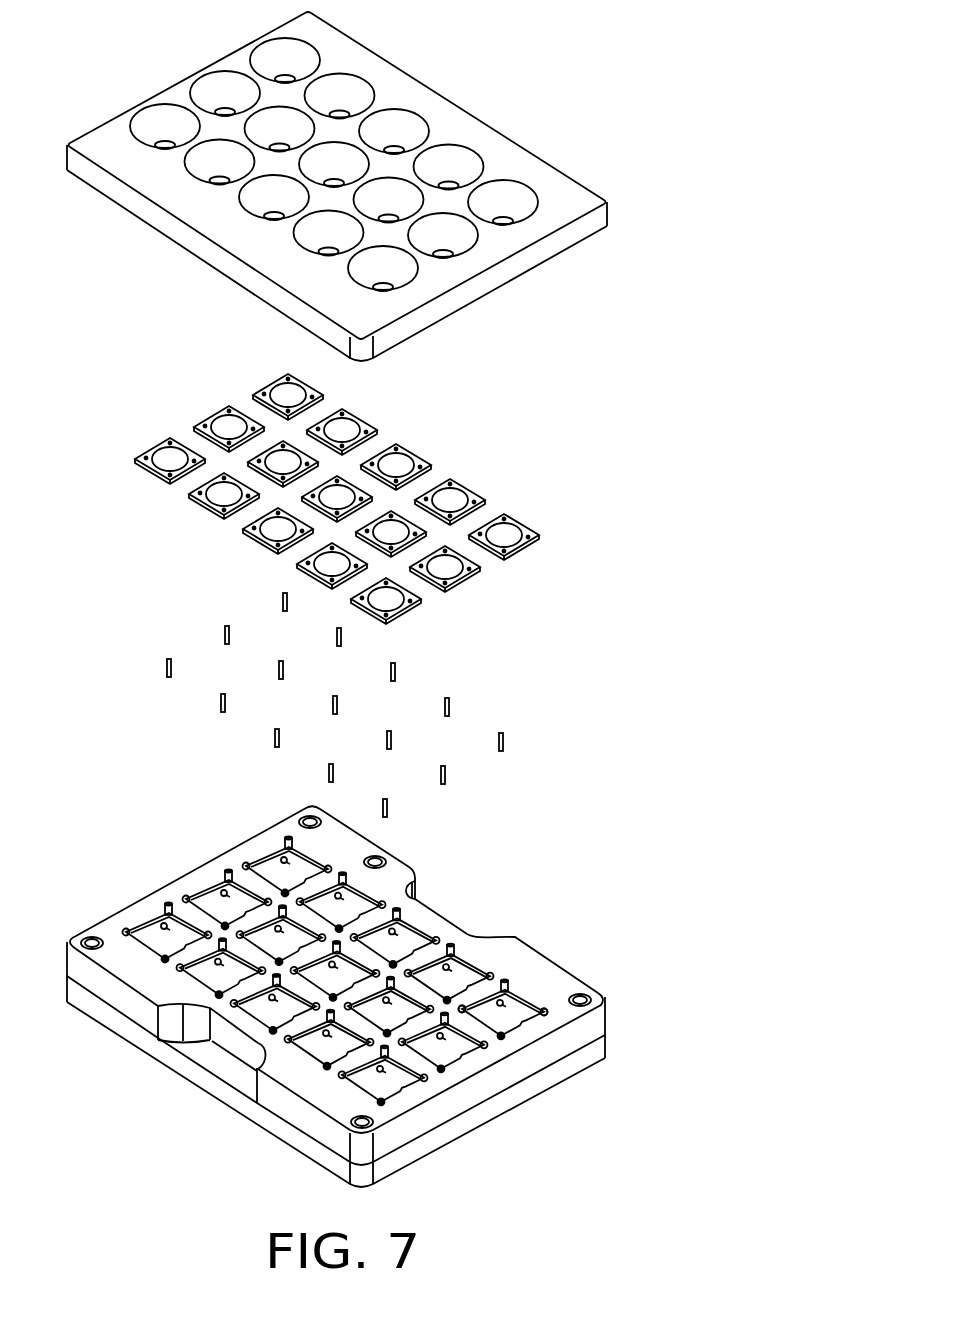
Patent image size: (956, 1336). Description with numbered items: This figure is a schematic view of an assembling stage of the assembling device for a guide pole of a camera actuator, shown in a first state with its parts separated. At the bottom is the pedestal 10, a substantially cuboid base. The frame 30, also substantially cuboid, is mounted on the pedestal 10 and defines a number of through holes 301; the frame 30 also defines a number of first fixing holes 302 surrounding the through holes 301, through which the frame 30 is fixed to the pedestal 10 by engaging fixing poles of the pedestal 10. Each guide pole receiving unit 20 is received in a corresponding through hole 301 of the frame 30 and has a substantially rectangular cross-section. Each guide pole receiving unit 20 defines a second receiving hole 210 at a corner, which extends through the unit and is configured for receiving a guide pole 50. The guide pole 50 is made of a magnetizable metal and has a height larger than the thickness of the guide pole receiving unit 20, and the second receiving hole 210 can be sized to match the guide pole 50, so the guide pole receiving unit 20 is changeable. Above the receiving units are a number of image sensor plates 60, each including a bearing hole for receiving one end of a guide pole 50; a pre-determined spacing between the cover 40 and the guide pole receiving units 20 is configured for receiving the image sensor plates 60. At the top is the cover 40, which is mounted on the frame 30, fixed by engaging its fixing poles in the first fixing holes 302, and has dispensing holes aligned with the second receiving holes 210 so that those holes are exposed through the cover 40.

The pedestal 10 is at (597, 1052).
The guide pole receiving unit 20 is at (507, 1018).
The frame 30 is at (600, 1020).
The cover 40 is at (437, 108).
The guide pole 50 is at (505, 739).
The image sensor plate 60 is at (520, 533).
The second receiving hole 210 is at (505, 988).
The through hole 301 is at (527, 995).
The first fixing hole 302 is at (388, 858).